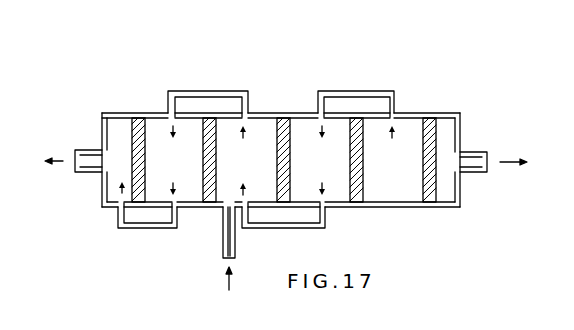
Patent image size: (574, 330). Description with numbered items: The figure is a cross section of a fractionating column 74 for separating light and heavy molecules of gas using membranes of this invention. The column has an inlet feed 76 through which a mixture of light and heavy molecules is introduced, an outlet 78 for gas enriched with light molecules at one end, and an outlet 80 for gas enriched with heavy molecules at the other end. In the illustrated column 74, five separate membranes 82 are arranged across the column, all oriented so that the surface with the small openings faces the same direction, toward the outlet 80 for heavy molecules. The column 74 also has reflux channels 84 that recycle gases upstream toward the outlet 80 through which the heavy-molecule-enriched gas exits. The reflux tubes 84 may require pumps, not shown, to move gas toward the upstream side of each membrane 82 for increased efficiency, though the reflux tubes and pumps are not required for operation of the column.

The fractionating column 74 is at (418, 95).
The inlet feed 76 is at (224, 252).
The outlet for gas enriched with light molecules 78 is at (478, 152).
The outlet for gas enriched with heavy molecules 80 is at (83, 150).
The membranes 82 is at (146, 165).
The reflux channels 84 is at (203, 91).